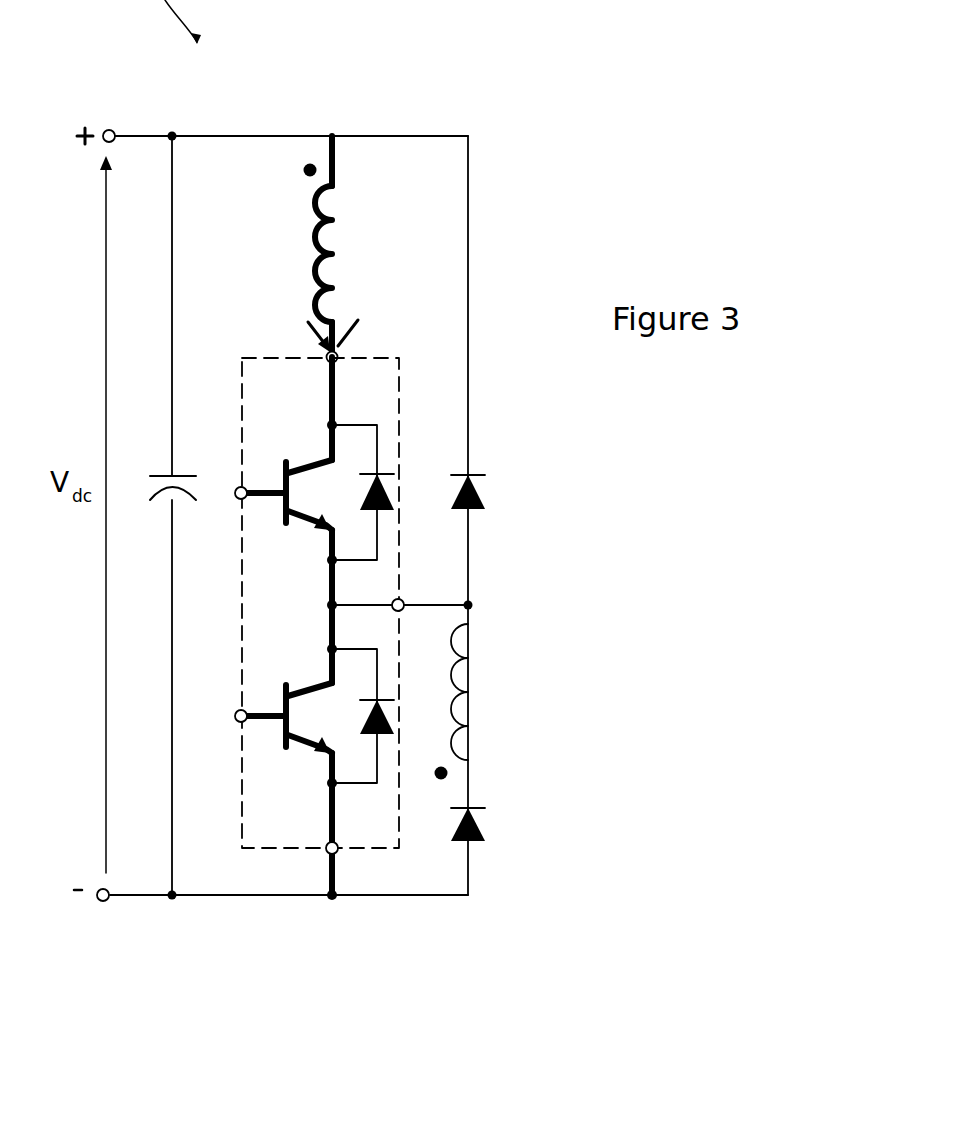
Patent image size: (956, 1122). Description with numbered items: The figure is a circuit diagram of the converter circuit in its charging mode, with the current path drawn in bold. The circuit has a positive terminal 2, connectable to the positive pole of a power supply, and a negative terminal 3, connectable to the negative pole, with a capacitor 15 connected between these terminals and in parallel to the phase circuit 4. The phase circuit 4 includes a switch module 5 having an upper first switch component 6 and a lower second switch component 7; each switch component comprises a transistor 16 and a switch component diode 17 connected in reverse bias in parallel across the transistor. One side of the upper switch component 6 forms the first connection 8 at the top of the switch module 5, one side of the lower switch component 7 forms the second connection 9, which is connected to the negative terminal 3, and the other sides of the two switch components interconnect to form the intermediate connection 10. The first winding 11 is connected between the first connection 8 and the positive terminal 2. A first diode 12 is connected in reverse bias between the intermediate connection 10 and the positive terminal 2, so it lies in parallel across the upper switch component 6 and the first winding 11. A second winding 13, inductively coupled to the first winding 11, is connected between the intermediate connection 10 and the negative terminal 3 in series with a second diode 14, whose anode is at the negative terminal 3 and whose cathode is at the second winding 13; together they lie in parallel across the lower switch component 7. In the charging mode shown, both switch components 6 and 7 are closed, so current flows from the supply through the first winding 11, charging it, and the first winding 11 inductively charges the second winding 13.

The positive terminal 2 is at (108, 128).
The negative terminal 3 is at (100, 903).
The phase circuit 4 is at (400, 110).
The switch module 5 is at (250, 358).
The switch component 6 is at (301, 434).
The switch component 7 is at (302, 670).
The first connection 8 is at (324, 352).
The second connection 9 is at (326, 852).
The intermediate connection 10 is at (401, 599).
The first winding 11 is at (310, 188).
The first diode 12 is at (477, 512).
The second winding 13 is at (470, 672).
The second diode 14 is at (478, 845).
The capacitor 15 is at (162, 472).
The transistor 16 is at (258, 502).
The switch component diode 17 is at (362, 492).